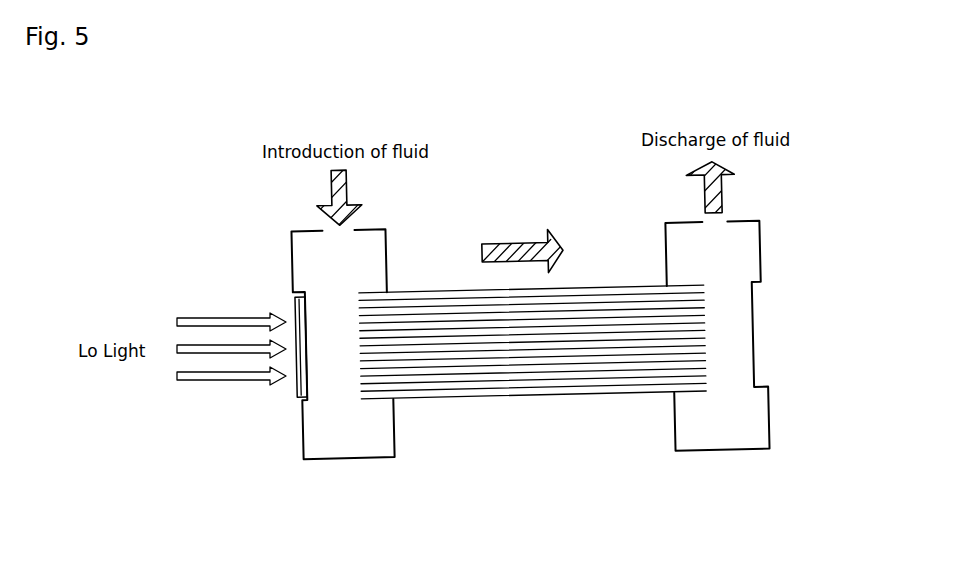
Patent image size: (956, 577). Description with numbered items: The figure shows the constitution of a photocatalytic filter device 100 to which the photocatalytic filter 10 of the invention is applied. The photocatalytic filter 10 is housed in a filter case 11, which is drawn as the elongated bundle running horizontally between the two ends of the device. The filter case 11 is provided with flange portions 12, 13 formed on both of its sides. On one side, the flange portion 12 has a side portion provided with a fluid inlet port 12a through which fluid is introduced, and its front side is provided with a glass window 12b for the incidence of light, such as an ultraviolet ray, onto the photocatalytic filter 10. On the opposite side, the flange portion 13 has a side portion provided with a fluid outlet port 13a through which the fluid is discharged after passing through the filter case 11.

The photocatalytic filter device 100 is at (424, 353).
The photocatalytic filter 10 is at (484, 380).
The filter case 11 is at (593, 395).
The flange portion 12 is at (357, 458).
The fluid inlet port 12a is at (345, 229).
The glass window 12b is at (297, 379).
The flange portion 13 is at (737, 450).
The fluid outlet port 13a is at (708, 219).